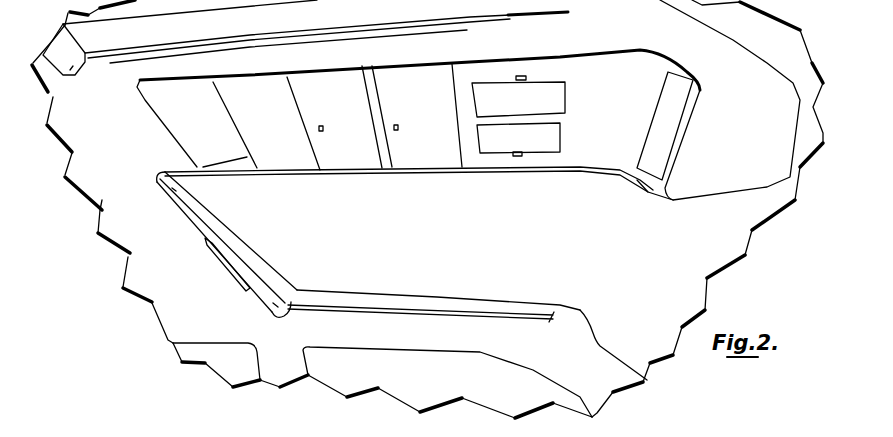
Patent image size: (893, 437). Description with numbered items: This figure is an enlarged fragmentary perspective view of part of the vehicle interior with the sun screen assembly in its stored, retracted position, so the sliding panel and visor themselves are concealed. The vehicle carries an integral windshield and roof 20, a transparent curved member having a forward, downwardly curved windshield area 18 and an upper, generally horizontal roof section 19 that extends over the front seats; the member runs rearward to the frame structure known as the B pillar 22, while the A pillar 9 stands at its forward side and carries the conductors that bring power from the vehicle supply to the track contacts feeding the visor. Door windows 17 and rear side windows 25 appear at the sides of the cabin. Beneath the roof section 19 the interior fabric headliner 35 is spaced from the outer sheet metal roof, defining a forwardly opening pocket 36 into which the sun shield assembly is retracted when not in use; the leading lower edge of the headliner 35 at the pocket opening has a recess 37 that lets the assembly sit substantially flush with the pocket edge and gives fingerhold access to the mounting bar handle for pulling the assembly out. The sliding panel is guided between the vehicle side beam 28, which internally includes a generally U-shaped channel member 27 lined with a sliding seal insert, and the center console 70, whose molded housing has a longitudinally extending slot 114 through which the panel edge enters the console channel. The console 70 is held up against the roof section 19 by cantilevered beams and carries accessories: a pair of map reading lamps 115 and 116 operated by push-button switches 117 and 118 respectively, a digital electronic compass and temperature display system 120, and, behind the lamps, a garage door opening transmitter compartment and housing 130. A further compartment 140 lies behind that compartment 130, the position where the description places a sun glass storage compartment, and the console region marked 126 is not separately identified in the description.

The A pillar 9 is at (617, 362).
The window 17 is at (442, 386).
The windshield area 18 is at (695, 298).
The roof section 19 is at (415, 248).
The integral windshield and roof 20 is at (723, 225).
The B pillar 22 is at (270, 355).
The rear side window 25 is at (197, 353).
The U-shaped channel member 27 is at (452, 308).
The vehicle side beam 28 is at (560, 333).
The interior headliner 35 is at (178, 253).
The pocket 36 is at (222, 217).
The recess 37 is at (229, 268).
The console 70 is at (378, 175).
The slot 114 is at (512, 17).
The map reading lamp 115 is at (555, 95).
The map reading lamp 116 is at (553, 133).
The push-button switch 117 is at (524, 74).
The push-button switch 118 is at (523, 155).
The digital electronic compass and temperature display system 120 is at (669, 99).
The side portion 126 is at (765, 117).
The garage door opening compartment and housing 130 is at (436, 136).
The panel section 140 is at (345, 138).